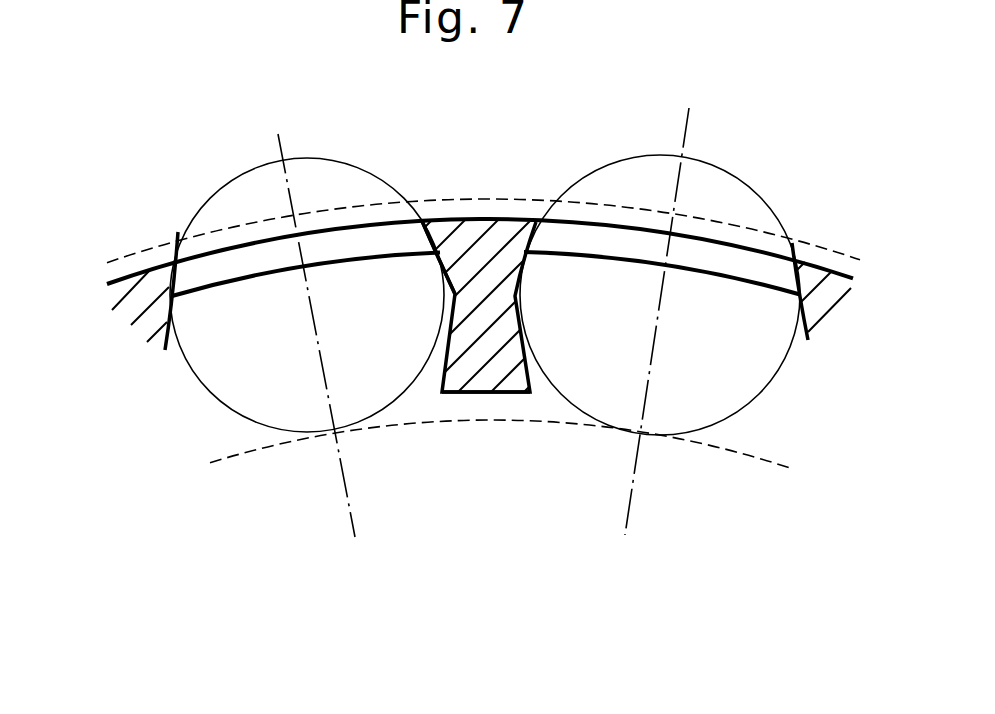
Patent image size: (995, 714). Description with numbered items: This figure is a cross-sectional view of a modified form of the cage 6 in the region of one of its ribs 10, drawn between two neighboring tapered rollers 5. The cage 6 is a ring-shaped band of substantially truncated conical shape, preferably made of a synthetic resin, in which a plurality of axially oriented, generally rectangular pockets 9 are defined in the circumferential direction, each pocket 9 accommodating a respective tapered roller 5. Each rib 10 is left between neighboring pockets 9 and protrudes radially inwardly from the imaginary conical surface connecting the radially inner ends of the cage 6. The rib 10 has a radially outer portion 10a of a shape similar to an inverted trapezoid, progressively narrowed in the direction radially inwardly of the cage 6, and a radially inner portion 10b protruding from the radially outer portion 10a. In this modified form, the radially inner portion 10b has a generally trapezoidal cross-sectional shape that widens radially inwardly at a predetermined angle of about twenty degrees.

The tapered roller 5 is at (240, 171).
The cage 6 is at (123, 282).
The pocket 9 is at (178, 283).
The rib 10 is at (484, 313).
The radially outer portion 10a is at (445, 287).
The radially inner portion 10b is at (472, 394).